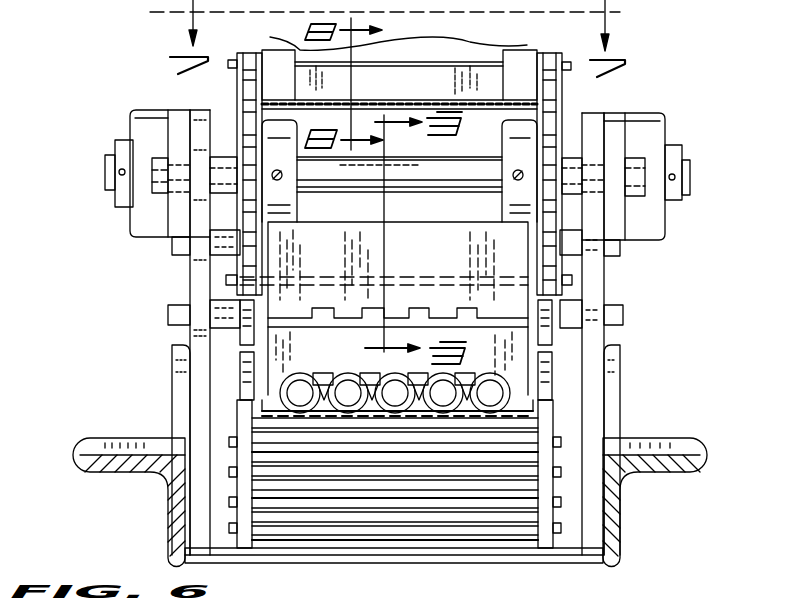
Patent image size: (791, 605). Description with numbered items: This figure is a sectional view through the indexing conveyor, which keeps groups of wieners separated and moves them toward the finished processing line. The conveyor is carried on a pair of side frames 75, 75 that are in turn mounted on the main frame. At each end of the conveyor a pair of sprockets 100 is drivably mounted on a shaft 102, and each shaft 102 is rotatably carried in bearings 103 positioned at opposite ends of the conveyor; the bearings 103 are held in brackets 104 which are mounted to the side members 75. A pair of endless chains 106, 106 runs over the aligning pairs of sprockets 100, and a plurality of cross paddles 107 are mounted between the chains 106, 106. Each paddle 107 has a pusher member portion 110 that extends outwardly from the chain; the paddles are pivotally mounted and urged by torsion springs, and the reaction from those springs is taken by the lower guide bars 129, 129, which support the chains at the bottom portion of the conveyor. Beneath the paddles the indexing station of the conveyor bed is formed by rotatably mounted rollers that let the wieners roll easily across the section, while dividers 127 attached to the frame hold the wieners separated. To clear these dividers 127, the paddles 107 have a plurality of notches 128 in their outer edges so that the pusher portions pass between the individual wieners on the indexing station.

The side frame 75 is at (178, 360).
The sprocket 100 is at (246, 108).
The shaft 102 is at (688, 162).
The bearing 103 is at (148, 118).
The bracket 104 is at (192, 282).
The endless chain 106 is at (250, 55).
The cross paddle 107 is at (348, 212).
The pusher member portion 110 is at (416, 270).
The divider 127 is at (470, 390).
The notch 128 is at (320, 385).
The lower guide bar 129 is at (248, 342).